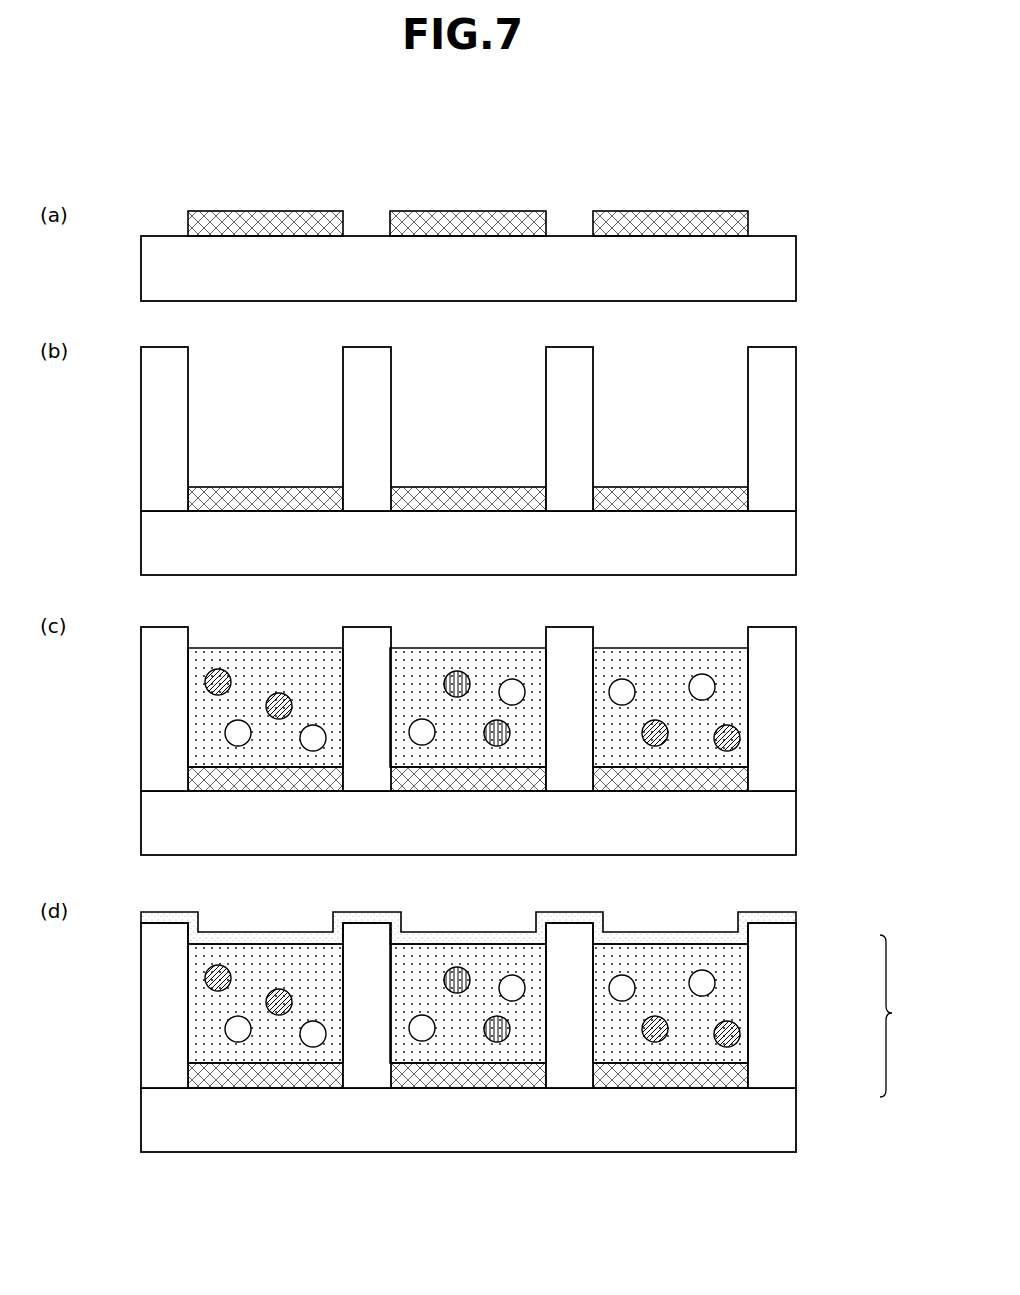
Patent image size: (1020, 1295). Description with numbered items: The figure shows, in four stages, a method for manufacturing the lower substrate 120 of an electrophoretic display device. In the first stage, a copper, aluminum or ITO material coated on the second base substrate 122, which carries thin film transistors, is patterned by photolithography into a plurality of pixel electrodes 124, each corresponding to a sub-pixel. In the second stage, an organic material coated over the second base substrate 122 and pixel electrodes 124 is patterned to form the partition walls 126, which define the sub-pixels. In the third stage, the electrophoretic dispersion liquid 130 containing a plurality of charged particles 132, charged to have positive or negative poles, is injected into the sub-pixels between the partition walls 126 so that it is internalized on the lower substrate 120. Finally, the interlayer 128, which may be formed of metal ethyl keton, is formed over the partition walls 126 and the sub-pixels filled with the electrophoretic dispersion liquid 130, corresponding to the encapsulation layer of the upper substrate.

The lower substrate 120 is at (903, 1016).
The second base substrate 122 is at (775, 269).
The pixel electrode 124 is at (732, 223).
The partition wall 126 is at (775, 463).
The interlayer 128 is at (738, 938).
The electrophoretic dispersion liquid 130 is at (742, 715).
The charged particle 132 is at (708, 686).